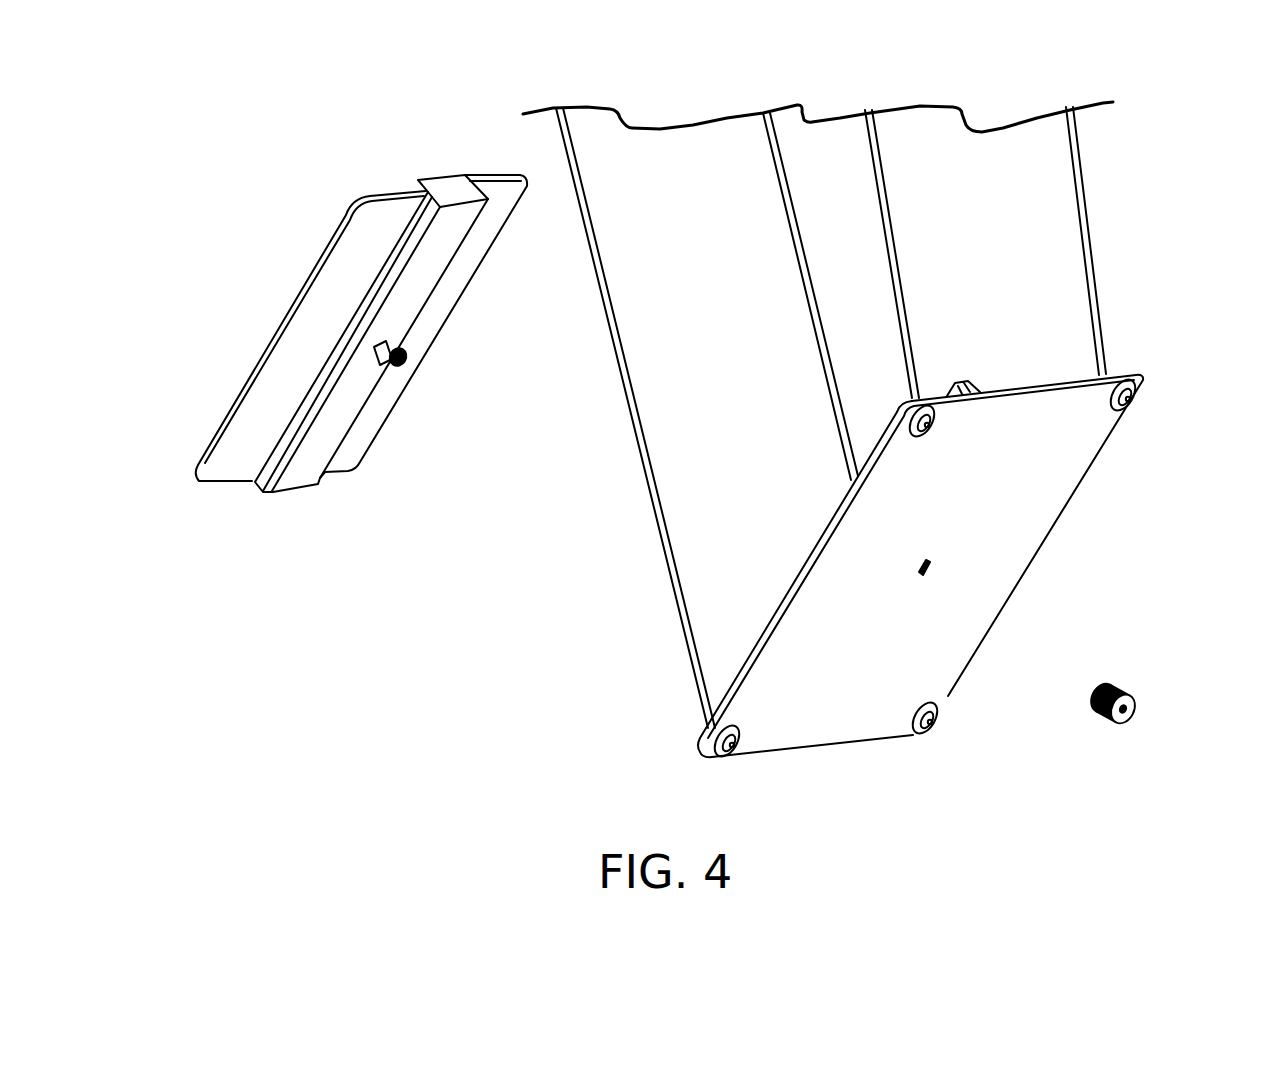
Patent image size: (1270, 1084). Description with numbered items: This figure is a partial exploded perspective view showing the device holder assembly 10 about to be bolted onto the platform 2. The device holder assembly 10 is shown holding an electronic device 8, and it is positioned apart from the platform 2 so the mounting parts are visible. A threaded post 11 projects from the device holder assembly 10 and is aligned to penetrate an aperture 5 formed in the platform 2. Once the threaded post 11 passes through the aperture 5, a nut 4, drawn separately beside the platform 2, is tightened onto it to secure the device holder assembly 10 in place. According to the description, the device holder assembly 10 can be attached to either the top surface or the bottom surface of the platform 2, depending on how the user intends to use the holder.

The platform 2 is at (1023, 539).
The nut 4 is at (1132, 688).
The aperture 5 is at (921, 576).
The electronic device 8 is at (373, 227).
The device holder assembly 10 is at (310, 443).
The threaded post 11 is at (404, 357).